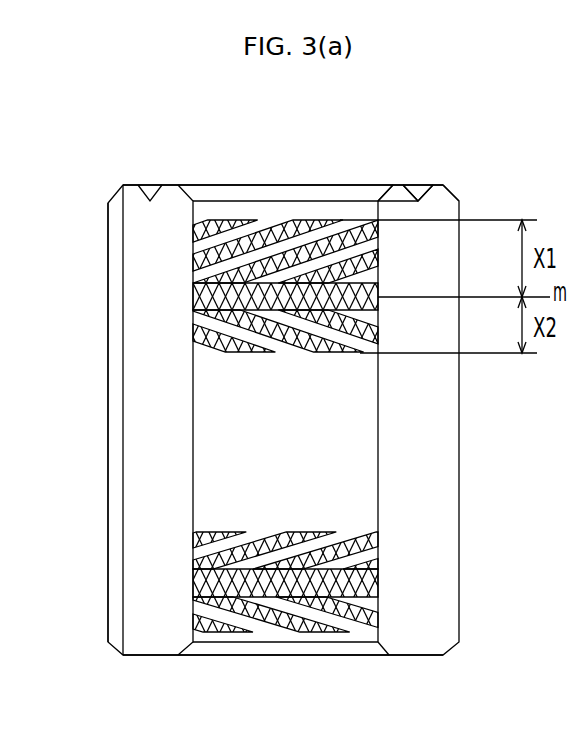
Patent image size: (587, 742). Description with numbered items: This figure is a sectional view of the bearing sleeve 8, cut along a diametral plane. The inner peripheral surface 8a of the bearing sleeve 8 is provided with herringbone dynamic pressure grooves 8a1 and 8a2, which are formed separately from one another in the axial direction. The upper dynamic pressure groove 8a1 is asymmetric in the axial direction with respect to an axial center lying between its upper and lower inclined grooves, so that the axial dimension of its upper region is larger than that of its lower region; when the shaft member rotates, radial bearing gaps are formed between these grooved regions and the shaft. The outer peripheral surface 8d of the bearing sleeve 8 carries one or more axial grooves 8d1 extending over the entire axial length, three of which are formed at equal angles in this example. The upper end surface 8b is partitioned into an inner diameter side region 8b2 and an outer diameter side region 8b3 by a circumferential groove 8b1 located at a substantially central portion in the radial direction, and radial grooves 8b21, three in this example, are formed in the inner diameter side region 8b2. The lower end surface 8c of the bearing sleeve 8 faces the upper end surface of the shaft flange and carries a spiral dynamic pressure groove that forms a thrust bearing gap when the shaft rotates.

The bearing sleeve 8 is at (97, 200).
The inner peripheral surface 8a is at (373, 423).
The upper dynamic pressure groove 8a1 is at (242, 232).
The lower dynamic pressure groove 8a2 is at (243, 543).
The upper end surface 8b is at (168, 184).
The circumferential groove 8b1 is at (419, 184).
The inner diameter side region 8b2 is at (397, 184).
The radial groove 8b21 is at (388, 184).
The outer diameter side region 8b3 is at (440, 184).
The lower end surface 8c is at (157, 657).
The outer peripheral surface 8d is at (107, 375).
The axial groove 8d1 is at (123, 437).